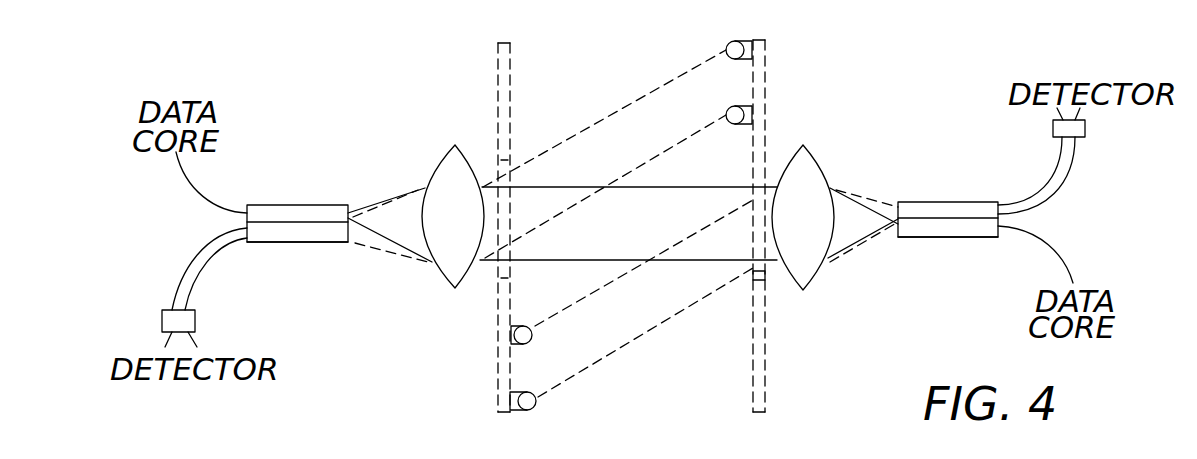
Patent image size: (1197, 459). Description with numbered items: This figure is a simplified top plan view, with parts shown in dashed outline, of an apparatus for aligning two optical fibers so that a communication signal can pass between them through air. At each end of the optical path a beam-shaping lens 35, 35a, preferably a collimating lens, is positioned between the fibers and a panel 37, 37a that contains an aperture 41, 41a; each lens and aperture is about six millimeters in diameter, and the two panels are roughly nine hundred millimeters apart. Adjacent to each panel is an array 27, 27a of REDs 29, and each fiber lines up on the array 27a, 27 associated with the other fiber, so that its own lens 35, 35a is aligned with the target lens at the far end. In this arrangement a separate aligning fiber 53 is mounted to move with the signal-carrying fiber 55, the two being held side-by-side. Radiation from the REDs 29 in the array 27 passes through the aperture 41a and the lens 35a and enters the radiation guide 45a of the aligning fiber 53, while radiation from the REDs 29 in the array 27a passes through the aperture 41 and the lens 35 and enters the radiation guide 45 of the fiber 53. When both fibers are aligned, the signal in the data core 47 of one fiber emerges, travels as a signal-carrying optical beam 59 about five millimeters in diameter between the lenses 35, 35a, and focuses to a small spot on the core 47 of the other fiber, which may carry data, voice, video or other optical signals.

The array 27 is at (675, 53).
The array 27a is at (548, 408).
The REDs 29 is at (725, 50).
The beam-shaping lens 35 is at (813, 153).
The beam-shaping lens 35a is at (438, 167).
The panel 37 is at (766, 391).
The panel 37a is at (497, 403).
The aperture 41 is at (767, 276).
The aperture 41a is at (498, 165).
The radiation guide 45 is at (998, 213).
The radiation guide 45a is at (247, 237).
The core 47 is at (247, 217).
The aligning fiber 53 is at (293, 243).
The signal-carrying fiber 55 is at (303, 203).
The signal-carrying optical beam 59 is at (617, 230).